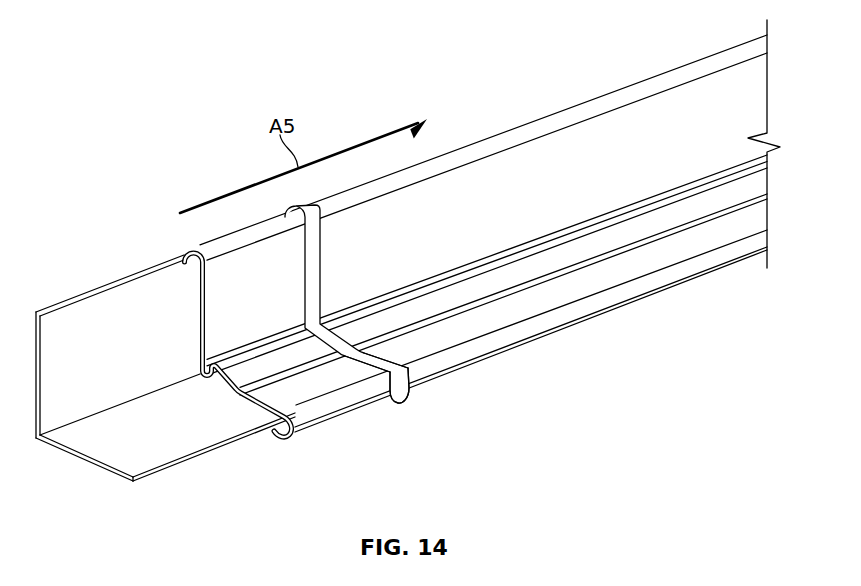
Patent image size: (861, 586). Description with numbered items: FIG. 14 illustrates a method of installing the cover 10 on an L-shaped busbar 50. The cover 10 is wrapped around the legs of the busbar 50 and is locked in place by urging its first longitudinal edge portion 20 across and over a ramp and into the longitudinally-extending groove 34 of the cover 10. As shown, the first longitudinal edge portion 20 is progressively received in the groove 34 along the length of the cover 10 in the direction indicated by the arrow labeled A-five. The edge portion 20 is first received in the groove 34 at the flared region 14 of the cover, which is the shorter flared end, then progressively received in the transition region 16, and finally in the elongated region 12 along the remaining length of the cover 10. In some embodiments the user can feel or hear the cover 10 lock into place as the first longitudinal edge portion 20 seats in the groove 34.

The cover 10 is at (568, 99).
The elongated region 12 is at (636, 322).
The flared region 14 is at (311, 444).
The transition region 16 is at (410, 402).
The first longitudinal edge portion 20 is at (220, 337).
The groove 34 is at (272, 330).
The busbar 50 is at (121, 273).